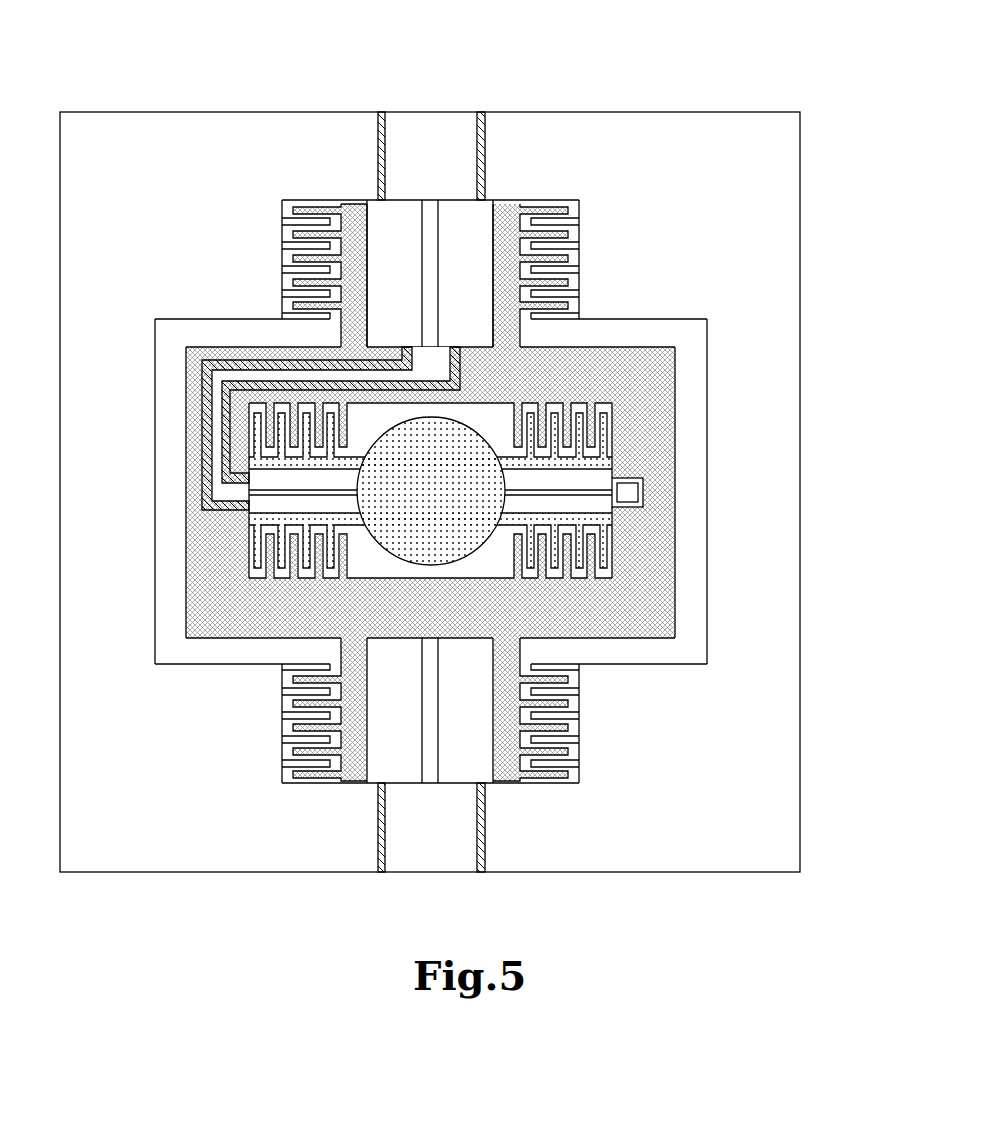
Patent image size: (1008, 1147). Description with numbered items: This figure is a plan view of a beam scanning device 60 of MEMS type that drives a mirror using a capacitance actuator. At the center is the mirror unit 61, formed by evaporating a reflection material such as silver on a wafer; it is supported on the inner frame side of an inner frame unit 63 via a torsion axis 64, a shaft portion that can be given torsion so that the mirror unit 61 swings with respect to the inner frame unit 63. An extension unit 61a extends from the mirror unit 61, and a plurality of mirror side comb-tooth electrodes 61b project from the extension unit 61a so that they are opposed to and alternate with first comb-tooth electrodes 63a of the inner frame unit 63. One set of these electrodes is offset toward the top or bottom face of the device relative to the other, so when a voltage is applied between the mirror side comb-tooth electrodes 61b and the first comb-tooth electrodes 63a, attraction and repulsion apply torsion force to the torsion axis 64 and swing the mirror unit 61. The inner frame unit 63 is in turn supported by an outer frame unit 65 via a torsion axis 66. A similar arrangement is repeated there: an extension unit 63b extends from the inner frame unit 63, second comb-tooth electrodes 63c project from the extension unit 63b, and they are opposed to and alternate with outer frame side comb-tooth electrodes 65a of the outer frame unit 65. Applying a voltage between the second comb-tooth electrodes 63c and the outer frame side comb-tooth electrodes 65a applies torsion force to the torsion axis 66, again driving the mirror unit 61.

The beam scanning device 60 is at (630, 82).
The mirror unit 61 is at (428, 548).
The extension unit 61a is at (283, 507).
The mirror side comb-tooth electrodes 61b is at (258, 550).
The inner frame unit 63 is at (637, 360).
The first comb-tooth electrodes 63a is at (267, 572).
The extension unit 63b is at (357, 732).
The second comb-tooth electrodes 63c is at (318, 778).
The torsion axis 64 is at (578, 490).
The outer frame unit 65 is at (777, 523).
The outer frame side comb-tooth electrodes 65a is at (558, 738).
The torsion axis 66 is at (428, 262).